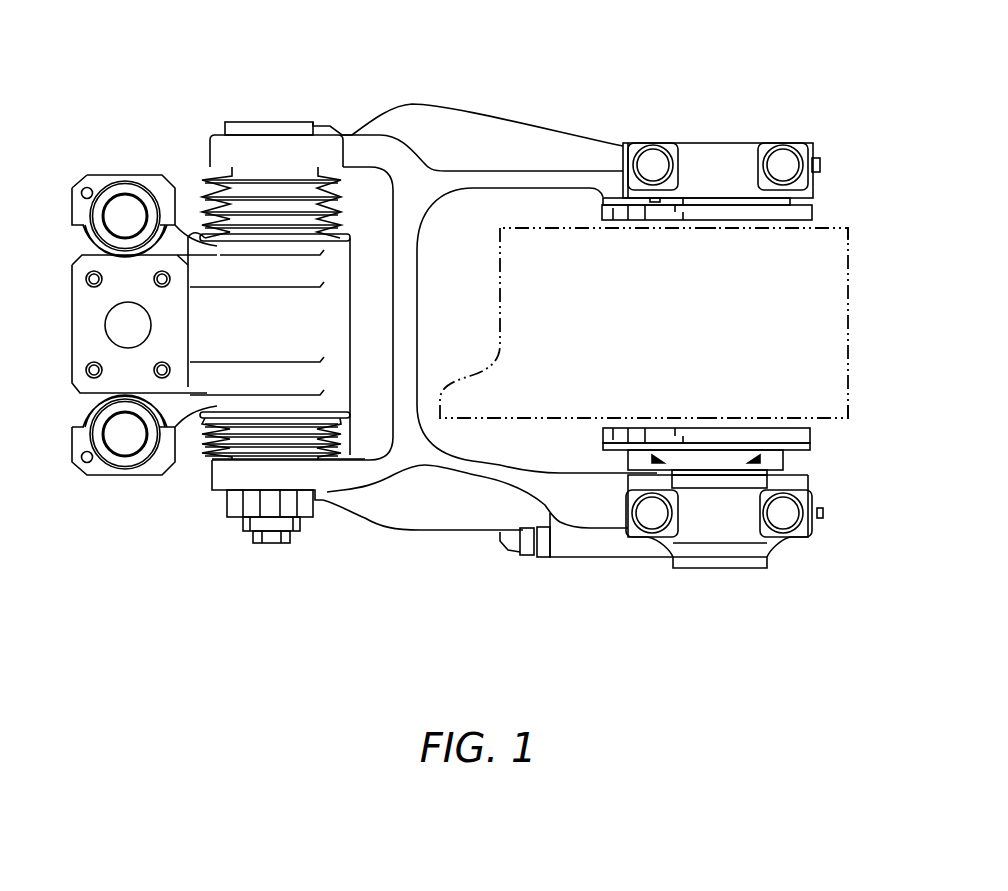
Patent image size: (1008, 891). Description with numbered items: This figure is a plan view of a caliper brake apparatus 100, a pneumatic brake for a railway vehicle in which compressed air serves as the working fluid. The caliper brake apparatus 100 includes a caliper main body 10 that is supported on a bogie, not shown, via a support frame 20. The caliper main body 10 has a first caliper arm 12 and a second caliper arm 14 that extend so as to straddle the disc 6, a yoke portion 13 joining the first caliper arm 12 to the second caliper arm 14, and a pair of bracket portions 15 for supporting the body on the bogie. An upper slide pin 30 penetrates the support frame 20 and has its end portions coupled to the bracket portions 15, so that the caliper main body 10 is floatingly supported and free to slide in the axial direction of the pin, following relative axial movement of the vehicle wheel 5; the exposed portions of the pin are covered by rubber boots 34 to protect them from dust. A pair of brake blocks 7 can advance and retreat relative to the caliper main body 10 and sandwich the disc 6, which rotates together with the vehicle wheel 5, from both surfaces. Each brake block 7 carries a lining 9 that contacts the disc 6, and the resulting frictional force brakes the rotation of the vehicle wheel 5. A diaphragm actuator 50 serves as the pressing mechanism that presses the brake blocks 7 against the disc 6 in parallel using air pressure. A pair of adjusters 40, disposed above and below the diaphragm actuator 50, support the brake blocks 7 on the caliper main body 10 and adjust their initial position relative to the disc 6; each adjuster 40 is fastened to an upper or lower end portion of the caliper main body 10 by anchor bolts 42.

The caliper brake apparatus 100 is at (800, 86).
The caliper main body 10 is at (548, 108).
The vehicle wheel 5 is at (537, 344).
The disc 6 is at (825, 228).
The brake block 7 is at (603, 210).
The lining 9 is at (708, 228).
The first caliper arm 12 is at (457, 470).
The yoke portion 13 is at (400, 305).
The second caliper arm 14 is at (502, 182).
The bracket portion 15 is at (273, 160).
The support frame 20 is at (125, 175).
The upper slide pin 30 is at (280, 542).
The rubber boot 34 is at (238, 190).
The adjuster 40 is at (700, 165).
The anchor bolt 42 is at (655, 172).
The diaphragm actuator 50 is at (734, 568).